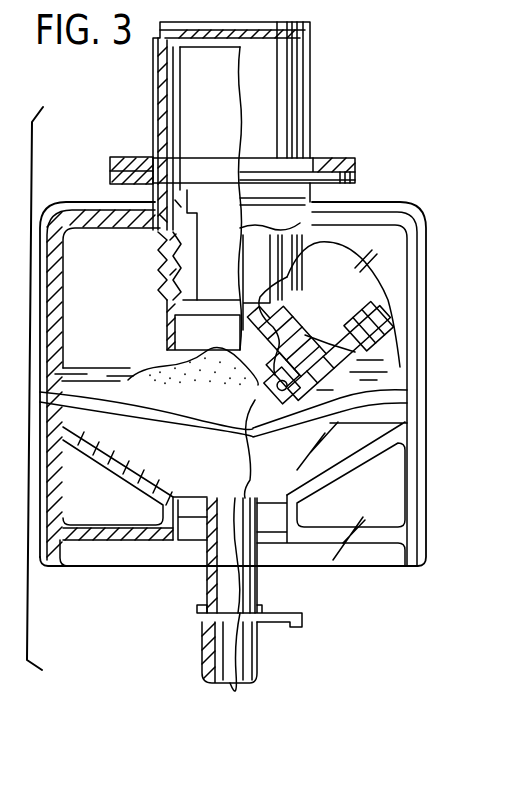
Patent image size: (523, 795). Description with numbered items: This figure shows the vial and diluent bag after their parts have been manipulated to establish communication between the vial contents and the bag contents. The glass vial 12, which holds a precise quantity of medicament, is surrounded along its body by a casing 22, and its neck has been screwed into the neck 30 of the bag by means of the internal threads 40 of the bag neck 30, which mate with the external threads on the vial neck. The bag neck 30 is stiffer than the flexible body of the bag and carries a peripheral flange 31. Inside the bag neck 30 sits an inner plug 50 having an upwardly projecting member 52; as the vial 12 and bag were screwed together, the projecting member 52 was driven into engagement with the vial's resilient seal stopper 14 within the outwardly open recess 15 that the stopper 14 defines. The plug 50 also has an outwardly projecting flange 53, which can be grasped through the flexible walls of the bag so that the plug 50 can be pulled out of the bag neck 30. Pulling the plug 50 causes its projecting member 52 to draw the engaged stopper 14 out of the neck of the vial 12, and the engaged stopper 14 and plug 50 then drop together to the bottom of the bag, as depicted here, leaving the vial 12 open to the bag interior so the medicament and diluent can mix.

The glass vial 12 is at (318, 112).
The casing 22 is at (295, 75).
The neck 30 is at (310, 192).
The peripheral flange 31 is at (110, 176).
The internal threads 40 is at (183, 260).
The seal plug or stopper 14 is at (332, 298).
The upwardly projecting member 52 is at (290, 275).
The inner plug 50 is at (397, 305).
The outwardly open recess 15 is at (305, 337).
The outwardly projecting flange 53 is at (262, 395).